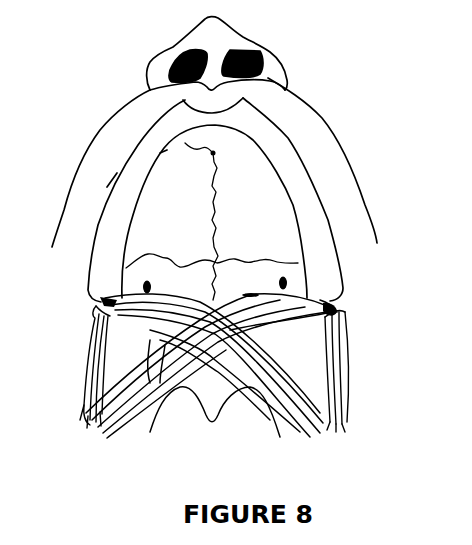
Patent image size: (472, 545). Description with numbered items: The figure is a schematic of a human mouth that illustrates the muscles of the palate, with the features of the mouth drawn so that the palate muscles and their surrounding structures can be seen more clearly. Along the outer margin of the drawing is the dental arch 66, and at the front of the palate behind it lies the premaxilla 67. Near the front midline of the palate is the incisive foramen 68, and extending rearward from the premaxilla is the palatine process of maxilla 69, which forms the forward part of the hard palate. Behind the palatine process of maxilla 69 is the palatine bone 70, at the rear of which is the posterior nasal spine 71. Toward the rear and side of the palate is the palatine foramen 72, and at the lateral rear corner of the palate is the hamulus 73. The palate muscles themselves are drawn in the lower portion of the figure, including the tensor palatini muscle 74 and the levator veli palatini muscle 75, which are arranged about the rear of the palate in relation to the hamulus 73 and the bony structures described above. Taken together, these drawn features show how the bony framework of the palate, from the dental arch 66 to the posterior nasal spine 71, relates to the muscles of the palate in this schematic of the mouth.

The dental arch 66 is at (243, 118).
The premaxilla 67 is at (222, 136).
The incisive foramen 68 is at (215, 153).
The palatine process of maxilla 69 is at (253, 190).
The palatine bone 70 is at (250, 267).
The posterior nasal spine 71 is at (300, 284).
The palatine foramen 72 is at (325, 294).
The hamulus 73 is at (337, 313).
The tensor palatini muscle 74 is at (341, 361).
The levator veli palatini muscle 75 is at (308, 391).